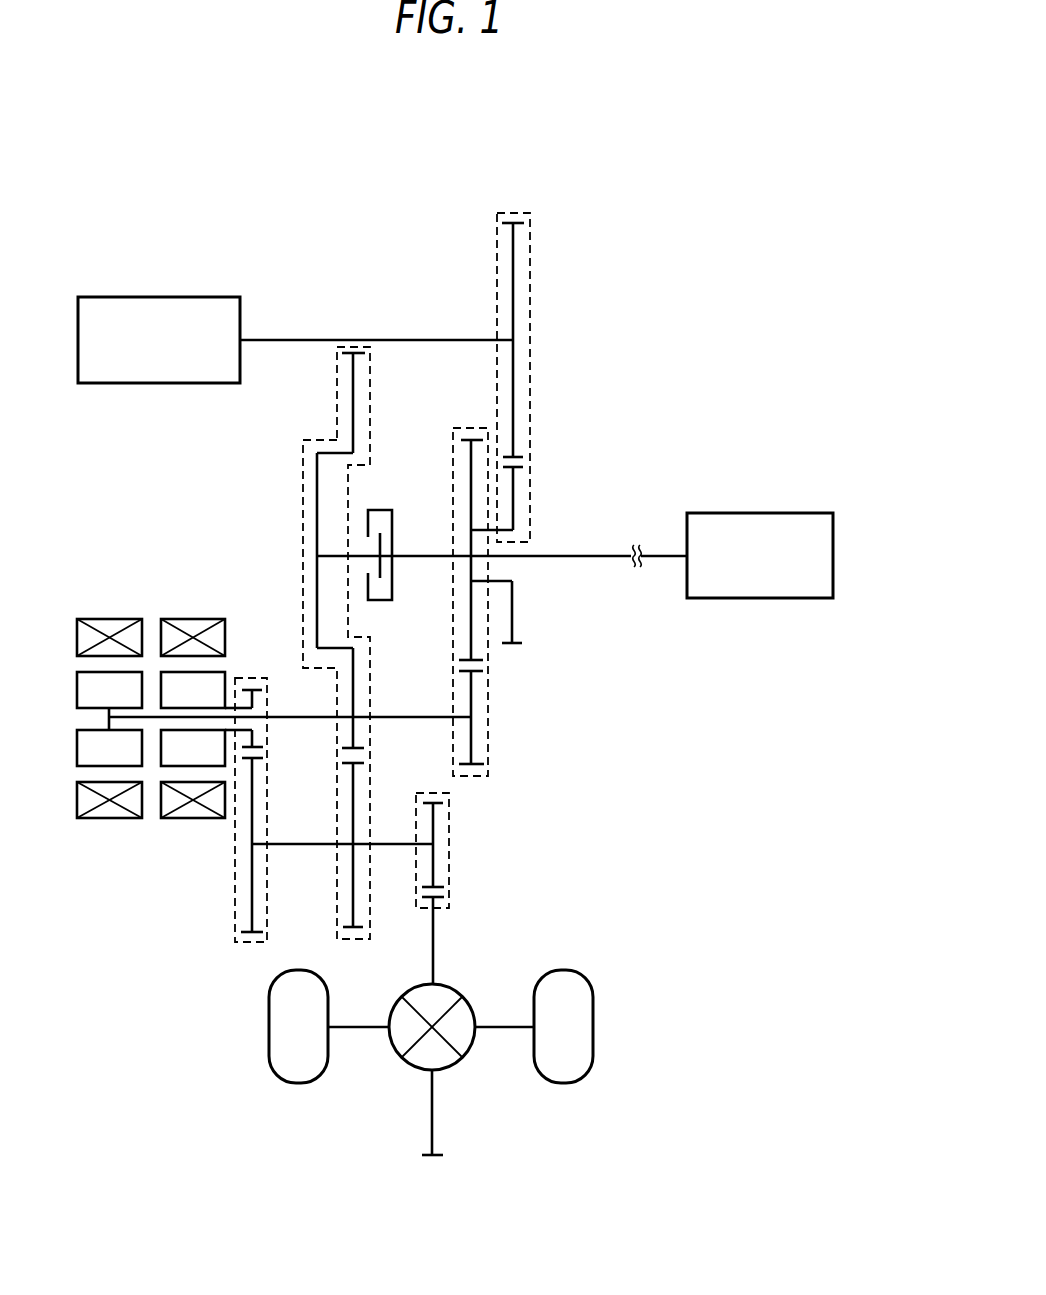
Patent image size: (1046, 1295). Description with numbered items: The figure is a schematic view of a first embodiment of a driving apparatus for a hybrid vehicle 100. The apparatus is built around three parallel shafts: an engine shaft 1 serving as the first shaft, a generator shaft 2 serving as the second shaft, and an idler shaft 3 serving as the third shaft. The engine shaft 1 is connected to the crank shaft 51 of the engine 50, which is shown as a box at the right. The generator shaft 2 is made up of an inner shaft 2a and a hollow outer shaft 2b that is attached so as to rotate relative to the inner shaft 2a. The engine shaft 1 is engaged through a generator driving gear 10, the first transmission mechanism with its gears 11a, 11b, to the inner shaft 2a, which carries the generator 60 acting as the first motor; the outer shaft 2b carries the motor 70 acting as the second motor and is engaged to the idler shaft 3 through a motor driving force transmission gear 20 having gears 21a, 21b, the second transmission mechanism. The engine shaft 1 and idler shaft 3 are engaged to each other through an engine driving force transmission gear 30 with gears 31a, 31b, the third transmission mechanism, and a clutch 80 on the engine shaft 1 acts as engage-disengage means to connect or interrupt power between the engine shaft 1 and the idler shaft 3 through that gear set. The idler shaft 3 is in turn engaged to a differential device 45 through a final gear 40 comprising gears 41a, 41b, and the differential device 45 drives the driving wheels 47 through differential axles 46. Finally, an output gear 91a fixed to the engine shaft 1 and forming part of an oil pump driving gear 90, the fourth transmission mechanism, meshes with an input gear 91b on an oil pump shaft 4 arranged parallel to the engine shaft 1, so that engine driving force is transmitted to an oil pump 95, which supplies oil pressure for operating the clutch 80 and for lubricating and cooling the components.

The driving apparatus for a hybrid vehicle 100 is at (737, 147).
The oil pump 95 is at (101, 296).
The oil pump shaft 4 is at (426, 339).
The oil pump driving gear 90 is at (507, 211).
The output gear 91a is at (523, 646).
The input gear 91b is at (521, 226).
The engine driving force transmission gear 30 is at (372, 913).
The gear of engine driving force transmission gear 31a is at (342, 353).
The gear of engine driving force transmission gear 31b is at (362, 940).
The clutch 80 is at (384, 499).
The engine shaft 1 is at (596, 554).
The crank shaft 51 is at (661, 554).
The engine 50 is at (807, 512).
The generator driving gear 10 is at (490, 722).
The gear of generator driving gear 11a is at (462, 440).
The gear of generator driving gear 11b is at (482, 767).
The generator 60 is at (92, 609).
The motor 70 is at (180, 609).
The generator shaft 2 is at (290, 721).
The inner shaft 2a is at (300, 722).
The outer shaft 2b is at (250, 713).
The motor driving force transmission gear 20 is at (232, 917).
The gear of motor driving force transmission gear 21a is at (258, 689).
The gear of motor driving force transmission gear 21b is at (243, 934).
The idler shaft 3 is at (391, 843).
The final gear 40 is at (452, 842).
The gear of final gear 41a is at (446, 884).
The gear of final gear 41b is at (446, 897).
The differential device 45 is at (397, 1077).
The differential axles 46 is at (508, 1025).
The driving wheels 47 is at (300, 1085).